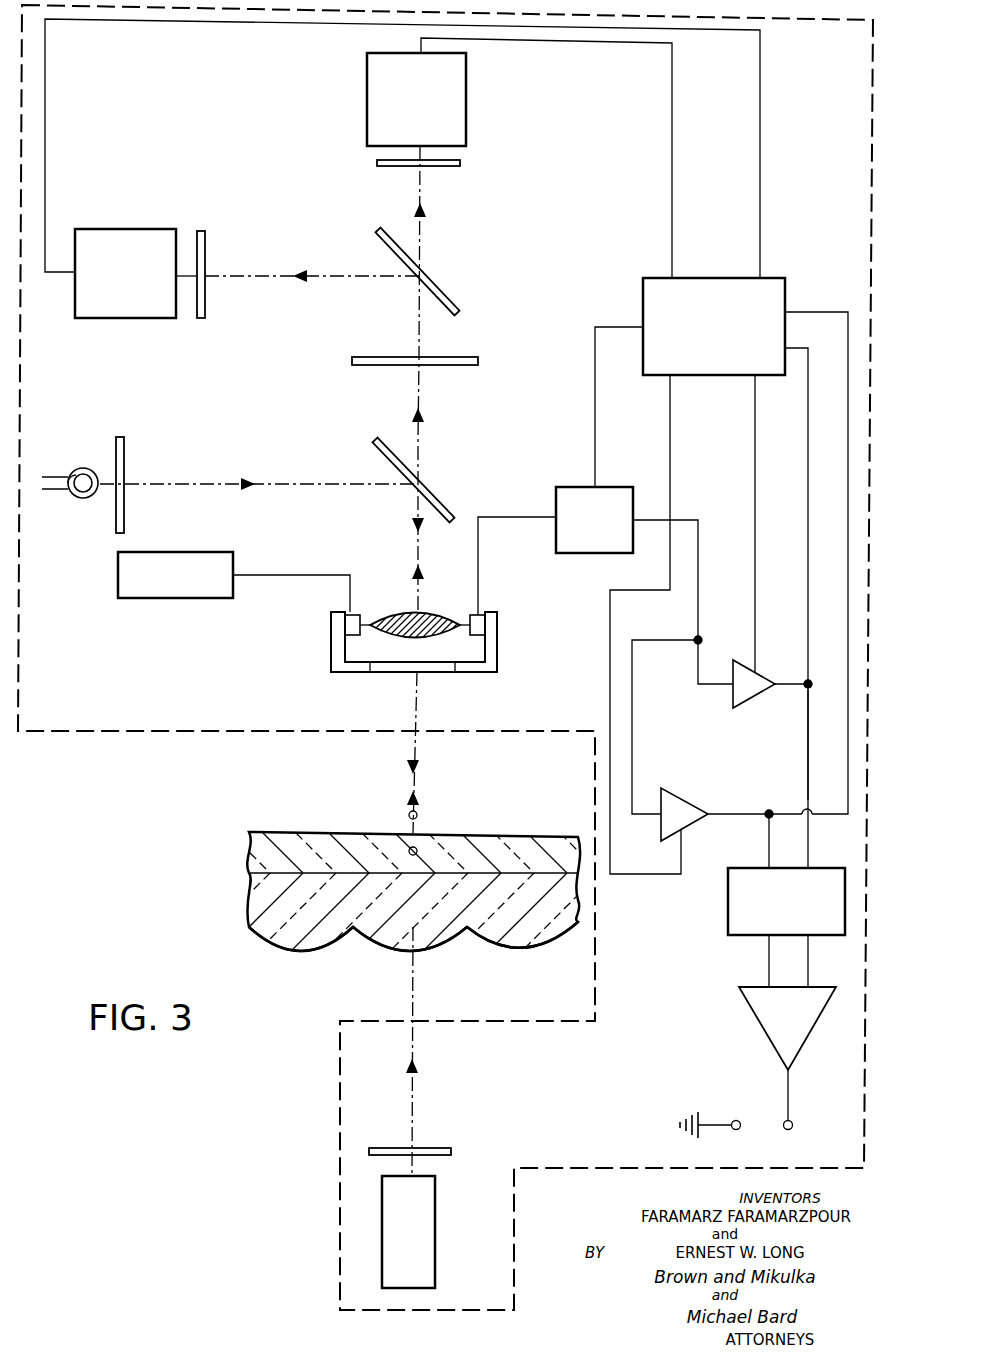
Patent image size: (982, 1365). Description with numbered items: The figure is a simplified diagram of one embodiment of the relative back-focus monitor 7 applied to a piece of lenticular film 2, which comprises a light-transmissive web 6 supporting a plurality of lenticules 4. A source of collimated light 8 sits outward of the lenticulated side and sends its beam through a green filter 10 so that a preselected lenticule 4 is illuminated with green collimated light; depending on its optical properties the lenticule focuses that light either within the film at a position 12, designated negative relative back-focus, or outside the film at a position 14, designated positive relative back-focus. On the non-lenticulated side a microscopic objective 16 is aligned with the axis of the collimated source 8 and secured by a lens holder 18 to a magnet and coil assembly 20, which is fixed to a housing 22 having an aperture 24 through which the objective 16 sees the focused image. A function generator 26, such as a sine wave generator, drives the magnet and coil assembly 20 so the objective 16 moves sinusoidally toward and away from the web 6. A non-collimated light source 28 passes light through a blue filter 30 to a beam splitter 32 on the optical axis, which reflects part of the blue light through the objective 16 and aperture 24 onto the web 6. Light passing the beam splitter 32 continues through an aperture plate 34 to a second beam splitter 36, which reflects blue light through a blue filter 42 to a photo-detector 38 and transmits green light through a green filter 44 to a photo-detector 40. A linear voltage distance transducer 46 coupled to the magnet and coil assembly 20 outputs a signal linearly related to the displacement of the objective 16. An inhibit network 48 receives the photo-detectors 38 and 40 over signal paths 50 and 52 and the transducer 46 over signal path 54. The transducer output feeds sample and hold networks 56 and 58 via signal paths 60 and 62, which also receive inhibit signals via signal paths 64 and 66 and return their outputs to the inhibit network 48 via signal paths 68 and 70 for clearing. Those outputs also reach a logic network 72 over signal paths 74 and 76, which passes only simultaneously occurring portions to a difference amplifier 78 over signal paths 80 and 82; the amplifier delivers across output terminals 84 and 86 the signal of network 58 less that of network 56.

The lenticular film 2 is at (384, 865).
The lenticules 4 is at (353, 927).
The web 6 is at (353, 832).
The relative back-focus monitor 7 is at (340, 1058).
The source of collimated light 8 is at (435, 1203).
The green filter 10 is at (430, 1148).
The focus position within the film 12 is at (417, 851).
The focus position without the film 14 is at (417, 815).
The microscopic objective 16 is at (394, 612).
The lens holder 18 is at (472, 615).
The magnet and coil assembly 20 is at (352, 635).
The housing 22 is at (331, 655).
The aperture 24 is at (445, 672).
The function generator 26 is at (207, 552).
The non-collimated light source 28 is at (83, 468).
The blue filter 30 is at (124, 455).
The beam splitter 32 is at (376, 440).
The aperture plate 34 is at (435, 357).
The second beam splitter 36 is at (432, 283).
The photo-detector 38 is at (117, 229).
The photo-detector 40 is at (466, 70).
The blue filter 42 is at (205, 240).
The green filter 44 is at (430, 166).
The linear voltage distance transducer 46 is at (620, 487).
The inhibit network 48 is at (700, 278).
The signal path 50 is at (760, 208).
The signal path 52 is at (672, 205).
The signal path 54 is at (595, 372).
The sample and hold network 56 is at (748, 700).
The sample and hold network 58 is at (685, 828).
The signal path 60 is at (698, 668).
The signal path 62 is at (632, 682).
The signal path 64 is at (755, 388).
The signal path 66 is at (670, 385).
The signal path 68 is at (808, 480).
The signal path 70 is at (848, 552).
The logic network 72 is at (818, 868).
The signal path 74 is at (808, 720).
The signal path 76 is at (776, 842).
The difference amplifier 78 is at (812, 1010).
The signal path 80 is at (808, 955).
The signal path 82 is at (769, 955).
The output terminal 84 is at (786, 1128).
The output terminal 86 is at (738, 1120).